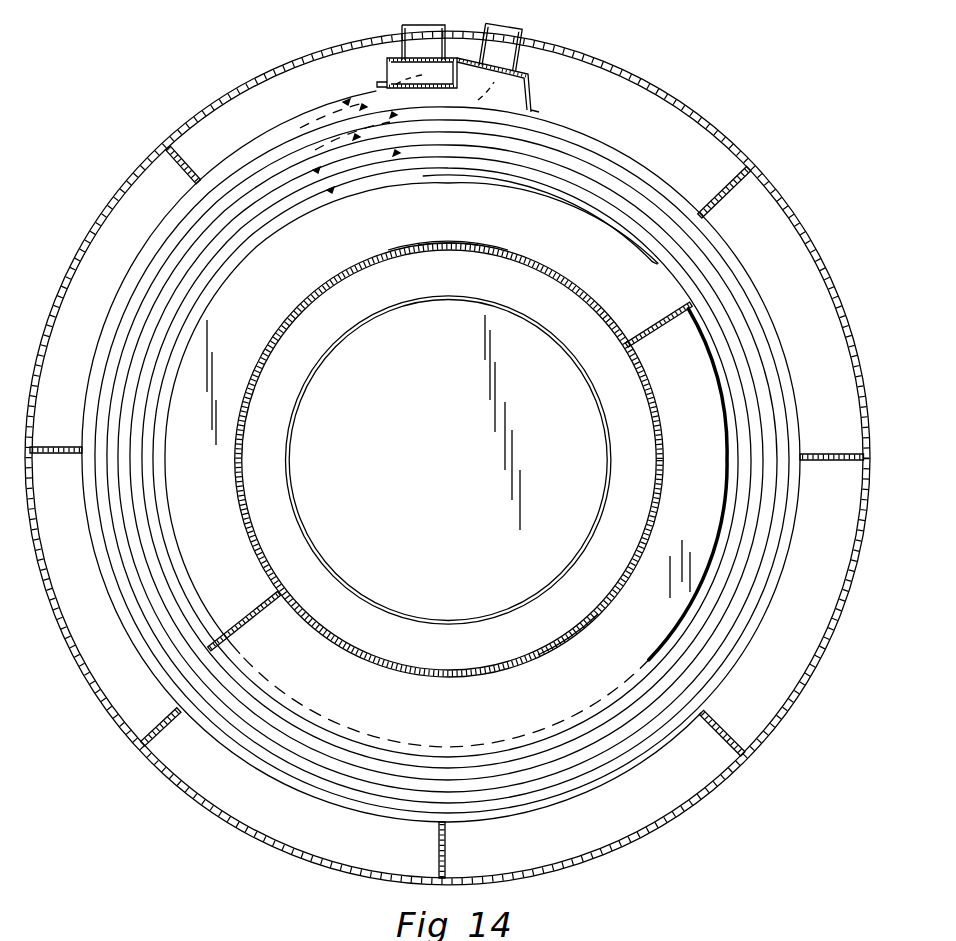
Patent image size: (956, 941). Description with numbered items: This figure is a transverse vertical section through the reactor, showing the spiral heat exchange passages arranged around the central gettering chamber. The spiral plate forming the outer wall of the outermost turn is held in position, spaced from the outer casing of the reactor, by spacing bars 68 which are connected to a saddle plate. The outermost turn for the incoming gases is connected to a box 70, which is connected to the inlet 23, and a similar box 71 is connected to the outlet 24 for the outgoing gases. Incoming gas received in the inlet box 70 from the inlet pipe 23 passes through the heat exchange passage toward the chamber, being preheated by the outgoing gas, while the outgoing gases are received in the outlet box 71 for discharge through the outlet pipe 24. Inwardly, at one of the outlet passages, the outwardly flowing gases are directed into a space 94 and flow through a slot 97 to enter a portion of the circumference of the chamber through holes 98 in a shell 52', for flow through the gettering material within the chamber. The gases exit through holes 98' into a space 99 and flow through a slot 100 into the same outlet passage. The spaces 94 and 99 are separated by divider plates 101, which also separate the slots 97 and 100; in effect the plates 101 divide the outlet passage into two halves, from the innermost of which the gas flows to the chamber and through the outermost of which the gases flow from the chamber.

The inlet 23 is at (403, 24).
The outlet 24 is at (518, 28).
The box 70 is at (385, 68).
The box 71 is at (532, 96).
The spacing bars 68 is at (832, 455).
The space 94 is at (483, 234).
The slot 97 is at (333, 198).
The holes 98 is at (446, 262).
The holes 98' is at (556, 631).
The shell 52' is at (449, 474).
The space 99 is at (631, 656).
The slot 100 is at (715, 372).
The divider plates 101 is at (665, 315).